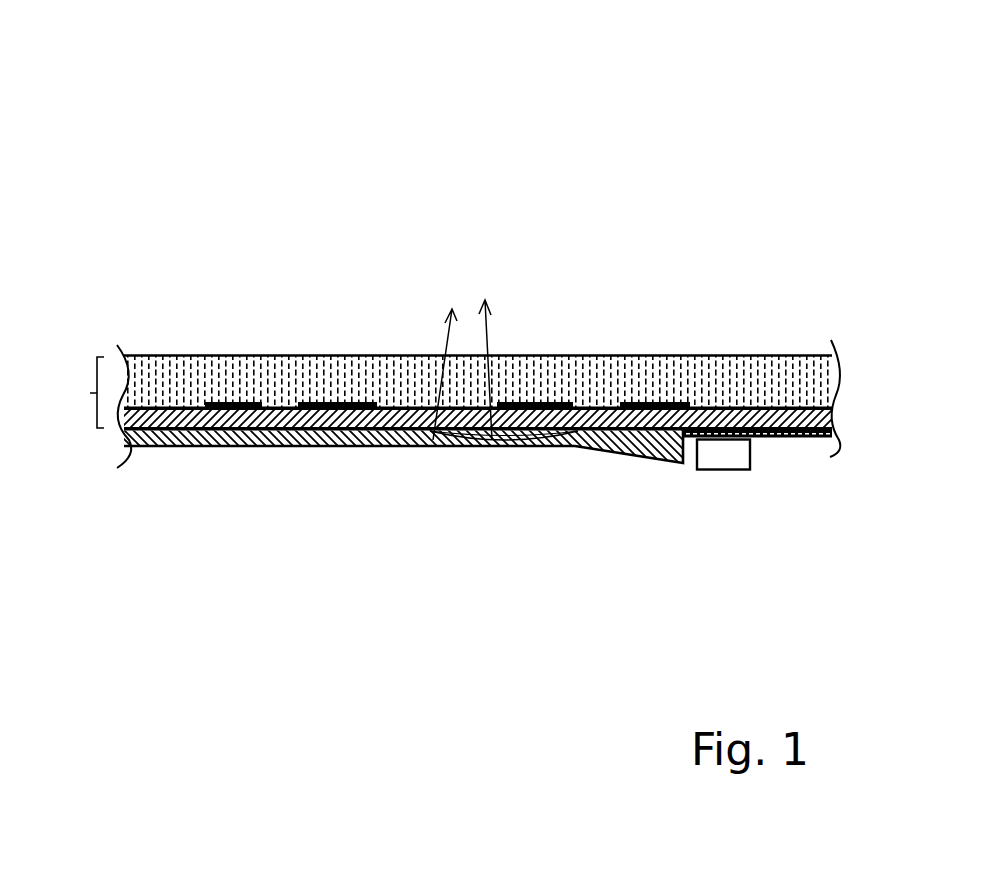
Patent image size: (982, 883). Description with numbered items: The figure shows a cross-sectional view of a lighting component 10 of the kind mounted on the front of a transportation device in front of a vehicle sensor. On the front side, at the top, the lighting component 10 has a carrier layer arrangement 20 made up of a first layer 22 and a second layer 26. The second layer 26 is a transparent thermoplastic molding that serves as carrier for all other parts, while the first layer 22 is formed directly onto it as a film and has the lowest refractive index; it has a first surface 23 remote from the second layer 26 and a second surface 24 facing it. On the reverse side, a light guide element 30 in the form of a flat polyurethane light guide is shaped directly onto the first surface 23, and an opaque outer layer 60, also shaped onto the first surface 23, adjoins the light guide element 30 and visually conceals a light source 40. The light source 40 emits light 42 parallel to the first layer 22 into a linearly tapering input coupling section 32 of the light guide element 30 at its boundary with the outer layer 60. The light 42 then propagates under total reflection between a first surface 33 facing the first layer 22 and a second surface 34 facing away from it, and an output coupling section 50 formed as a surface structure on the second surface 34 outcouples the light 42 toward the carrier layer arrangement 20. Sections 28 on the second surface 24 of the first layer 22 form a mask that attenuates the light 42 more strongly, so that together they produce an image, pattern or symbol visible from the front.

The lighting component 10 is at (553, 120).
The carrier layer arrangement 20 is at (431, 392).
The first layer 22 is at (181, 406).
The first surface 23 is at (245, 404).
The second surface 24 is at (300, 404).
The second layer 26 is at (398, 385).
The sections 28 is at (548, 404).
The light guide element 30 is at (162, 447).
The input coupling section 32 is at (655, 458).
The first surface 33 is at (305, 447).
The second surface 34 is at (240, 447).
The light source 40 is at (733, 455).
The light 42 is at (693, 404).
The output coupling section 50 is at (408, 447).
The outer layer 60 is at (800, 440).